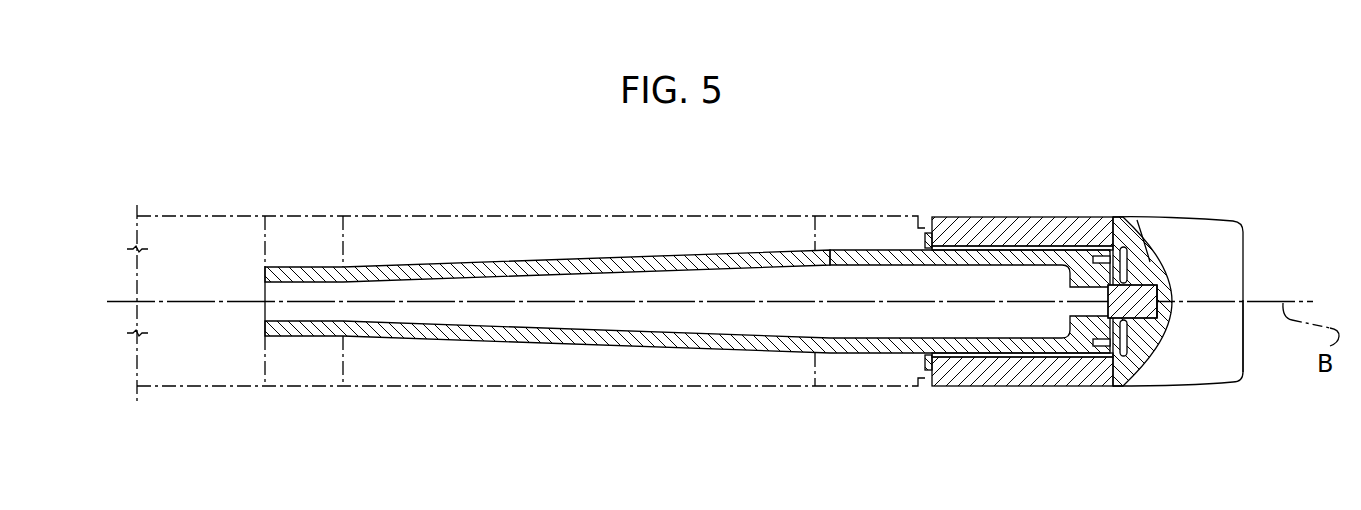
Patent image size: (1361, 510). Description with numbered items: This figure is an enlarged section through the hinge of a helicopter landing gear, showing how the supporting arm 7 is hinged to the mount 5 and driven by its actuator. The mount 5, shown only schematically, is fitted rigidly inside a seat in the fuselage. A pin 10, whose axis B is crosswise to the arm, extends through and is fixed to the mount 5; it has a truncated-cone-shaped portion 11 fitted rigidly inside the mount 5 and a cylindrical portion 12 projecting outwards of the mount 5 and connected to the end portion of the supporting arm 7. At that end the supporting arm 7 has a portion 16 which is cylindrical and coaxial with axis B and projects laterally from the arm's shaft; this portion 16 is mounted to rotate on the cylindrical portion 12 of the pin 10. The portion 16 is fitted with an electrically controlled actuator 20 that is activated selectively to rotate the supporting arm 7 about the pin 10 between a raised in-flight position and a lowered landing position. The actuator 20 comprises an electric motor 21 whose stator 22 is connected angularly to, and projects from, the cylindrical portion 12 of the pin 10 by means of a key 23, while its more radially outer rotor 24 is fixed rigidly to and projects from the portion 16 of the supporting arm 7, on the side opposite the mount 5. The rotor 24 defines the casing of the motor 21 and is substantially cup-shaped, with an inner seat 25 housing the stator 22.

The mount 5 is at (222, 398).
The supporting arm 7 is at (1020, 397).
The pin 10 is at (483, 258).
The truncated-cone-shaped portion 11 is at (581, 258).
The cylindrical portion 12 is at (858, 250).
The portion 16 is at (979, 217).
The electrically controlled actuator 20 is at (1252, 255).
The electric motor 21 is at (1185, 215).
The stator 22 is at (1157, 320).
The key 23 is at (1138, 246).
The rotor 24 is at (1225, 372).
The inner seat 25 is at (1170, 326).